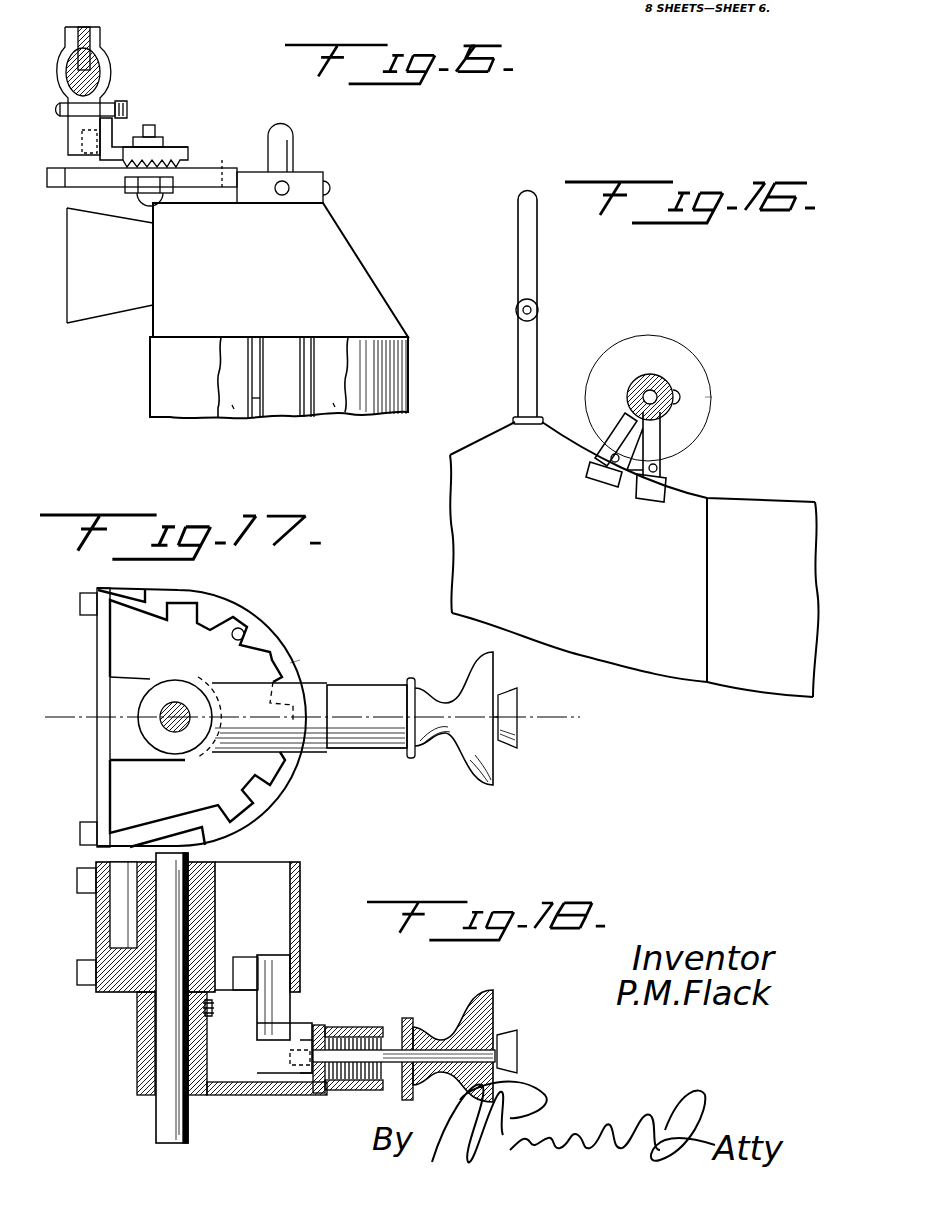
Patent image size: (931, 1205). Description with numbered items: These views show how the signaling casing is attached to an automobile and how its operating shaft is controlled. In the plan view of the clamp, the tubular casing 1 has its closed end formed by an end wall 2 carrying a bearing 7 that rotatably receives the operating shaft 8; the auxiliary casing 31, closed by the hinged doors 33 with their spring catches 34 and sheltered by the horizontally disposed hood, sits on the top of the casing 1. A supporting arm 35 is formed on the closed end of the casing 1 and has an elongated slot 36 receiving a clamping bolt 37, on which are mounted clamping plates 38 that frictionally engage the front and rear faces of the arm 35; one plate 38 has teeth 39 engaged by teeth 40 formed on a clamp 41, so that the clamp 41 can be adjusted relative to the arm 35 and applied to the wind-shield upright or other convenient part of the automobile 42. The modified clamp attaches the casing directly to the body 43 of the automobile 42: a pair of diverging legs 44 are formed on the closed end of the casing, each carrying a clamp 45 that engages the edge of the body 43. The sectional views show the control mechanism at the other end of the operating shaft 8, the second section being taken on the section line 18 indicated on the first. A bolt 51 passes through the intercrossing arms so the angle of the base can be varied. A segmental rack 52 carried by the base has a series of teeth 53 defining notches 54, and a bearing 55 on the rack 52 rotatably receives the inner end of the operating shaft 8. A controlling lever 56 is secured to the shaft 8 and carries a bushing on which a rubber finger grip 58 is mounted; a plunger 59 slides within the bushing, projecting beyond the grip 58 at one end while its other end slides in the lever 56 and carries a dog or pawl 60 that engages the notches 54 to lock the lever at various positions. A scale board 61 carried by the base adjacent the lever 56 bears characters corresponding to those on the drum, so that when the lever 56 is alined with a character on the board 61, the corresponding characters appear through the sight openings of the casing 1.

In FIG. 15, the tubular casing 1 is at (410, 367).
In FIG. 16, the tubular casing 1 is at (683, 343).
In FIG. 15, the end wall 2 is at (350, 273).
In FIG. 15, the bearing 7 is at (307, 178).
In FIG. 16, the bearing 7 is at (730, 412).
In FIG. 15, the operating shaft 8 is at (287, 152).
In FIG. 16, the operating shaft 8 is at (672, 392).
In FIG. 17, the operating shaft 8 is at (177, 710).
In FIG. 18, the operating shaft 8 is at (177, 1133).
In FIG. 17, the section line 18— 18 is at (68, 707).
In FIG. 15, the auxiliary casing 31 is at (281, 377).
In FIG. 15, the doors 33 is at (322, 383).
In FIG. 15, the spring catches 34 is at (337, 408).
In FIG. 15, the supporting arm 35 is at (197, 177).
In FIG. 15, the elongated slot 36 is at (225, 177).
In FIG. 15, the clamping bolt 37 is at (157, 125).
In FIG. 15, the clamping plates 38 is at (123, 192).
In FIG. 15, the teeth 39 is at (167, 195).
In FIG. 15, the teeth 40 is at (160, 157).
In FIG. 15, the clamp 41 is at (115, 150).
In FIG. 16, the automobile 42 is at (634, 559).
In FIG. 16, the body 43 is at (760, 597).
In FIG. 16, the diverging legs 44 is at (662, 450).
In FIG. 16, the clamp 45 is at (590, 495).
In FIG. 18, the bolt 51 is at (398, 1030).
In FIG. 17, the segmental rack 52 is at (197, 590).
In FIG. 18, the segmental rack 52 is at (262, 955).
In FIG. 17, the teeth 53 is at (207, 620).
In FIG. 17, the notches 54 is at (250, 637).
In FIG. 18, the notches 54 is at (273, 955).
In FIG. 17, the bearing 55 is at (125, 688).
In FIG. 18, the bearing 55 is at (123, 983).
In FIG. 17, the controlling lever 56 is at (322, 686).
In FIG. 18, the controlling lever 56 is at (308, 1027).
In FIG. 17, the finger grip 58 is at (479, 786).
In FIG. 18, the finger grip 58 is at (484, 991).
In FIG. 17, the plunger 59 is at (519, 740).
In FIG. 18, the plunger 59 is at (512, 1030).
In FIG. 18, the dog or pawl 60 is at (278, 1037).
In FIG. 17, the scale board 61 is at (310, 665).
In FIG. 18, the scale board 61 is at (313, 877).